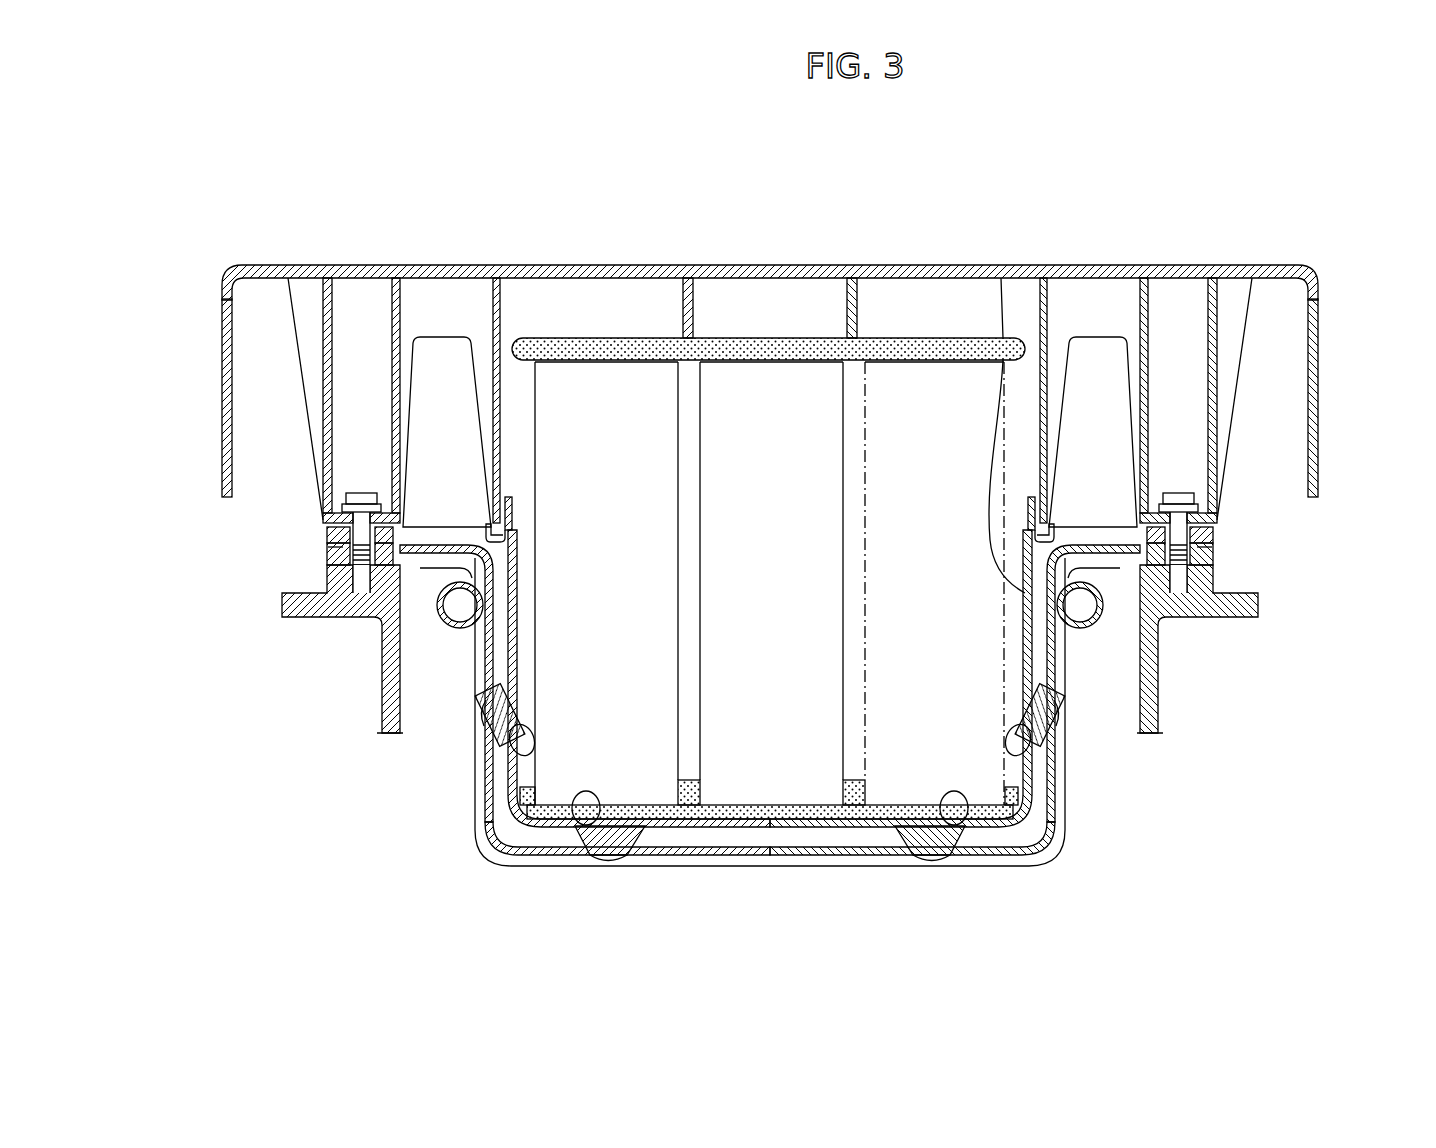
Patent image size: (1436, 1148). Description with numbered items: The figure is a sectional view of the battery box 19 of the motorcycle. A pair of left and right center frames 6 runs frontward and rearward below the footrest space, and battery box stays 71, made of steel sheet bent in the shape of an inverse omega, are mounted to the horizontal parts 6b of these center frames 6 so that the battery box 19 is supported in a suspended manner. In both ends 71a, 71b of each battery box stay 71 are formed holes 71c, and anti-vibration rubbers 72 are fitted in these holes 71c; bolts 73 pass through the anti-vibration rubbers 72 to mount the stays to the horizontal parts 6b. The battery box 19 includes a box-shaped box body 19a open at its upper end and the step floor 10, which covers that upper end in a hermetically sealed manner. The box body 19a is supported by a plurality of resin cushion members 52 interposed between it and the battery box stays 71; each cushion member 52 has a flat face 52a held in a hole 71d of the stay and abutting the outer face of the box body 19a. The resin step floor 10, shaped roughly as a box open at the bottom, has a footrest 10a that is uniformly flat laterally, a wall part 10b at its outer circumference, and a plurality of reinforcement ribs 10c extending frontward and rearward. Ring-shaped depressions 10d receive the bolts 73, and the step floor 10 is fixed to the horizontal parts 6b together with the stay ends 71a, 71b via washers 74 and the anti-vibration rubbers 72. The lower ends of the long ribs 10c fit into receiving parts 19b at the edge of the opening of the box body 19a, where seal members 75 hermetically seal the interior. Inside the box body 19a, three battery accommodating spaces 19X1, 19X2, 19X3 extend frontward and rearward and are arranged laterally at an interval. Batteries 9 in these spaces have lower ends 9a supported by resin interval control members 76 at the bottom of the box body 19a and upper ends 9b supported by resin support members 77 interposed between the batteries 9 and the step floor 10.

The center frame 6 is at (767, 648).
The horizontal part of center frame 6b is at (292, 594).
The battery 9 is at (814, 528).
The lower end of battery 9a is at (662, 822).
The upper end of battery 9b is at (589, 356).
The step floor 10 is at (774, 349).
The footrest 10a is at (911, 268).
The wall part 10b is at (221, 418).
The reinforcement rib 10c is at (400, 385).
The depression 10d is at (331, 385).
The battery box 19 is at (771, 528).
The box body 19a is at (1048, 375).
The receiving part 19b is at (492, 523).
The battery accommodating space 19X1 is at (606, 583).
The battery accommodating space 19X2 is at (771, 571).
The battery accommodating space 19X3 is at (905, 375).
The cushion member 52 is at (487, 718).
The flat face 52a is at (532, 757).
The battery box stay 71 is at (765, 683).
The end of battery box stay 71a is at (1214, 540).
The end of battery box stay 71b is at (325, 542).
The hole 71c is at (353, 517).
The hole 71d is at (487, 710).
The anti-vibration rubber 72 is at (327, 558).
The bolt 73 is at (362, 497).
The washer 74 is at (405, 540).
The seal member 75 is at (477, 528).
The interval control member 76 is at (752, 845).
The support member 77 is at (715, 347).